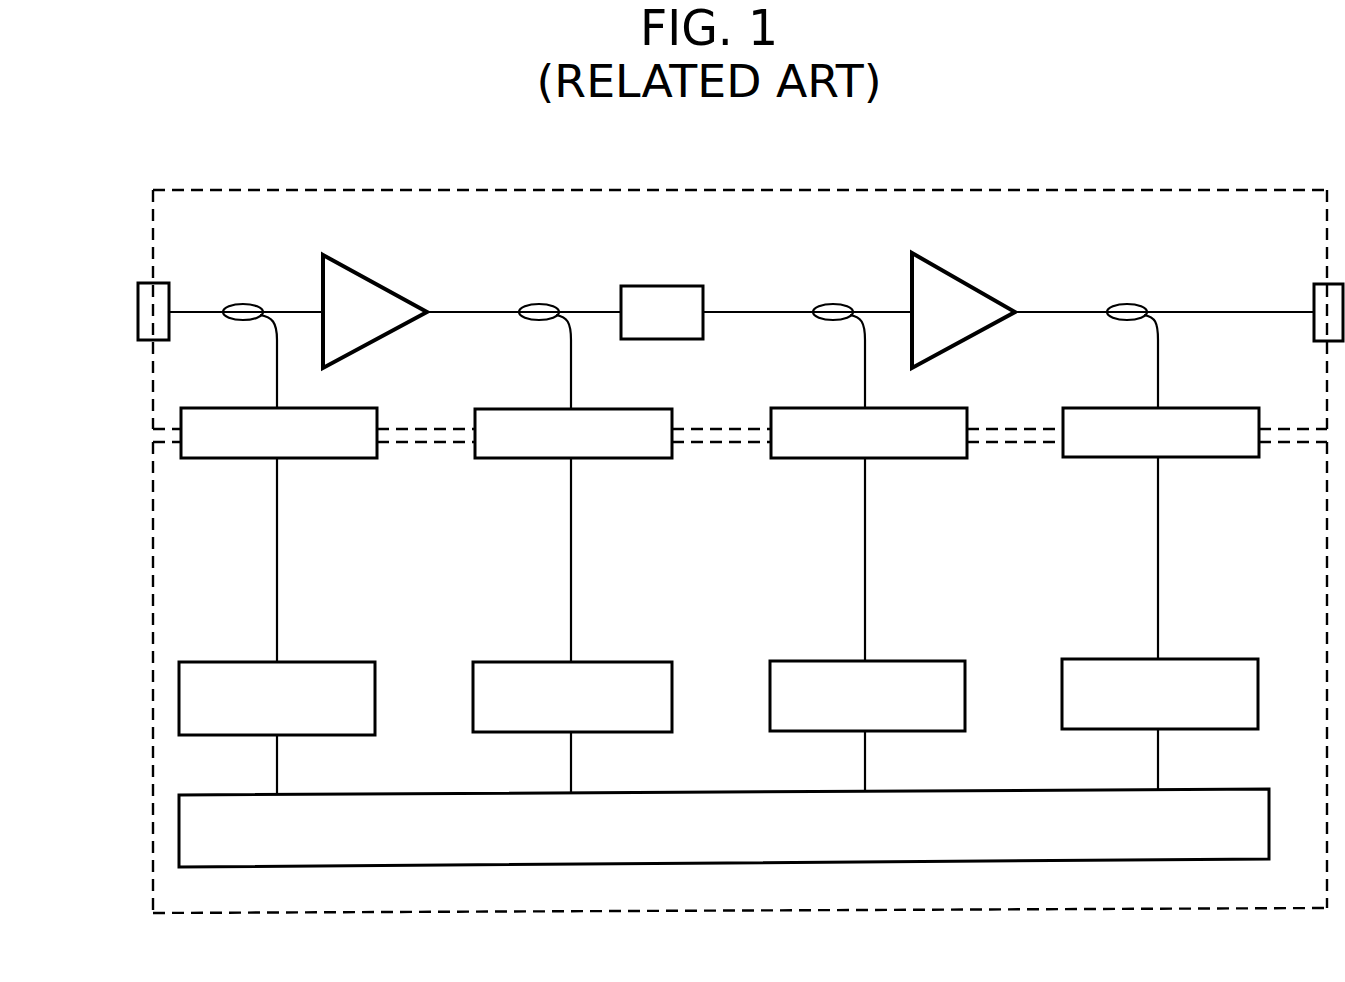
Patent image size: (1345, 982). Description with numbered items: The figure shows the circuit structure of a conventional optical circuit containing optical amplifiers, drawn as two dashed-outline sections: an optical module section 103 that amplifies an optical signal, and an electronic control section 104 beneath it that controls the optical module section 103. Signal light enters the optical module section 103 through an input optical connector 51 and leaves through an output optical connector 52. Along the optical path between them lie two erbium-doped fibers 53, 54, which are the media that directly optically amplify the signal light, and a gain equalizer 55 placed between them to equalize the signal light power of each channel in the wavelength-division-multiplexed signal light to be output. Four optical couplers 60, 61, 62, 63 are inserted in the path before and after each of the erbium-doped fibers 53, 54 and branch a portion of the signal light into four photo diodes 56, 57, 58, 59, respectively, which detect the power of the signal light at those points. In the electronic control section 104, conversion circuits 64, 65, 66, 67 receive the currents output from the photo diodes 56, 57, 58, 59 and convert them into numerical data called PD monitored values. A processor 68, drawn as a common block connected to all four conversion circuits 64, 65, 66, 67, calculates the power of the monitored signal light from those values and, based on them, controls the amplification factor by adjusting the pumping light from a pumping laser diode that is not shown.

The optical module section 103 is at (228, 189).
The electronic control section 104 is at (152, 528).
The optical connector 51 is at (158, 283).
The optical connector 52 is at (1322, 284).
The erbium-doped fiber 53 is at (370, 282).
The erbium-doped fiber 54 is at (955, 276).
The gain equalizer 55 is at (683, 286).
The photo diode 56 is at (345, 408).
The photo diode 57 is at (640, 409).
The photo diode 58 is at (935, 408).
The photo diode 59 is at (1228, 408).
The optical coupler 60 is at (250, 304).
The optical coupler 61 is at (546, 304).
The optical coupler 62 is at (840, 304).
The optical coupler 63 is at (1132, 304).
The conversion circuit 64 is at (340, 662).
The conversion circuit 65 is at (638, 662).
The conversion circuit 66 is at (930, 661).
The conversion circuit 67 is at (1225, 659).
The processor 68 is at (1232, 789).